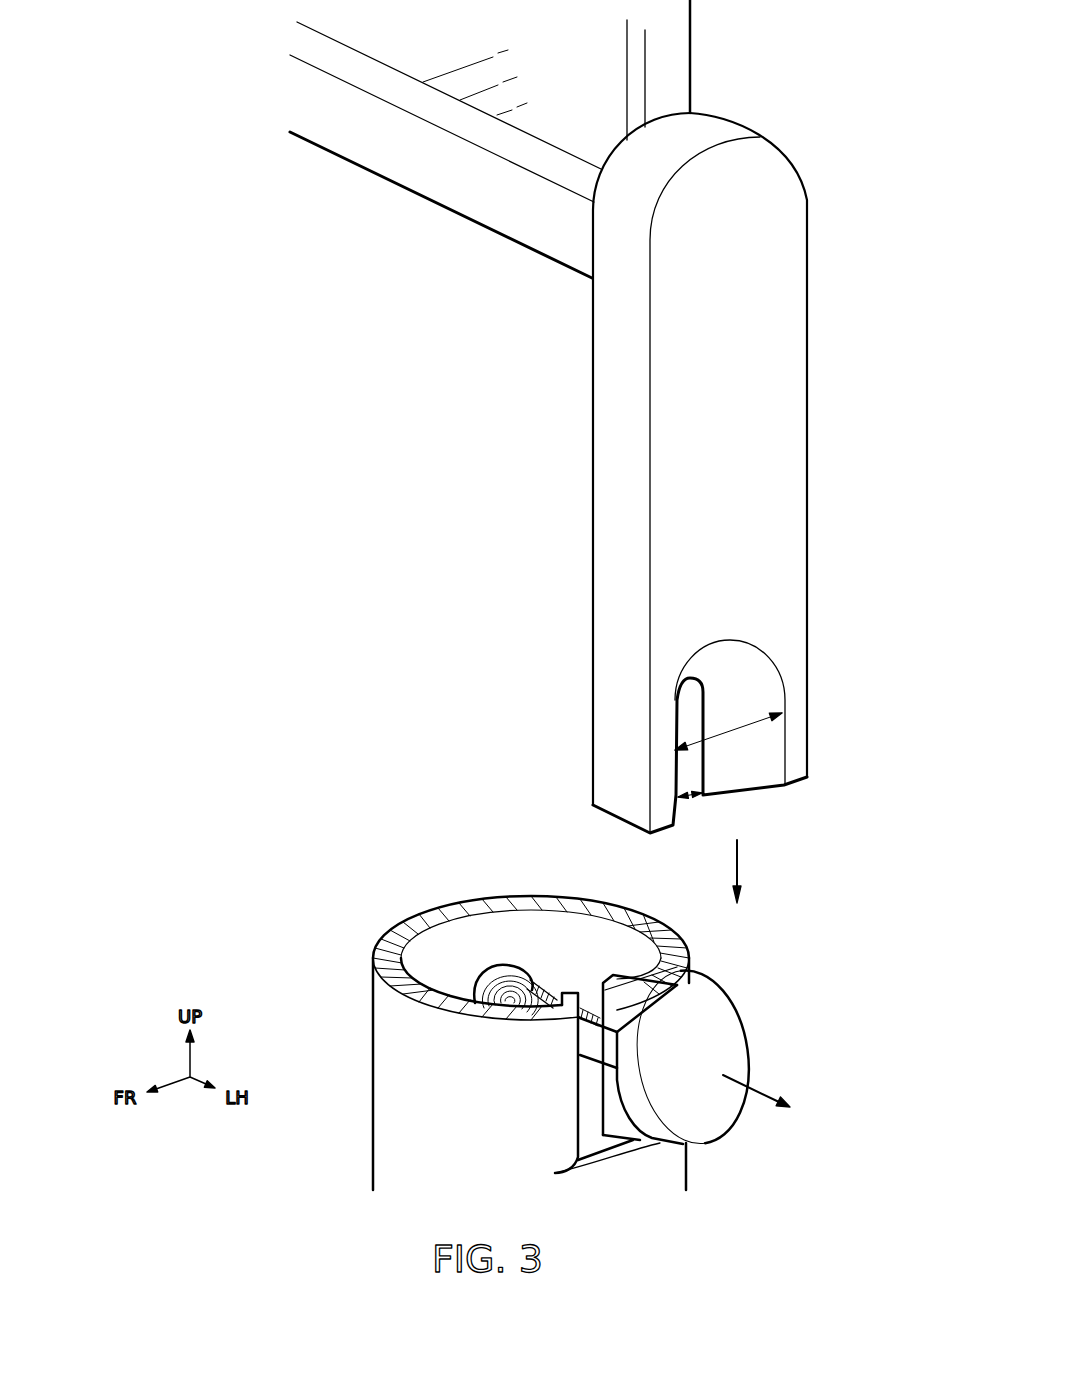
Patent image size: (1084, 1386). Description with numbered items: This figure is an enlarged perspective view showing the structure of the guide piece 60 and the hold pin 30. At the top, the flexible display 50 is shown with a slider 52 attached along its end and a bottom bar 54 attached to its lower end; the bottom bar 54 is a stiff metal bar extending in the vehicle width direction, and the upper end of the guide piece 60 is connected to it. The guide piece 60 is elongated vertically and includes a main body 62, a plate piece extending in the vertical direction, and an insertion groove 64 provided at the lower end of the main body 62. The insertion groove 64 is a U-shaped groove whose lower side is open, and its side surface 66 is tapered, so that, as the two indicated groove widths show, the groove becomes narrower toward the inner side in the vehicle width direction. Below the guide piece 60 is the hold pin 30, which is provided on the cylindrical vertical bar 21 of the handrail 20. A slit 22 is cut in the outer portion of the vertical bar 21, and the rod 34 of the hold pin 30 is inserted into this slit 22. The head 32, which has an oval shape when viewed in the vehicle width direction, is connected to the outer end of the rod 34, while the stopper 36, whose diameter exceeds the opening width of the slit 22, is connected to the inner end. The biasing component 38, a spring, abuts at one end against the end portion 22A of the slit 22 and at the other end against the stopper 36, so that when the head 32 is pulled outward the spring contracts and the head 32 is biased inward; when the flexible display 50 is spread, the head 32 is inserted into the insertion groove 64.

The handrail 20 is at (462, 1043).
The vertical bar 21 is at (352, 1027).
The slit 22 is at (597, 1100).
The end portion of the slit 22A is at (598, 995).
The hold pin 30 is at (678, 1029).
The head 32 is at (735, 1035).
The rod 34 is at (580, 1046).
The stopper 36 is at (497, 970).
The biasing component 38 is at (552, 987).
The flexible display 50 is at (575, 137).
The slider 52 is at (675, 72).
The bottom bar 54 is at (365, 138).
The guide piece 60 is at (586, 473).
The main body 62 is at (775, 367).
The insertion groove 64 is at (620, 735).
The side surface 66 is at (758, 685).